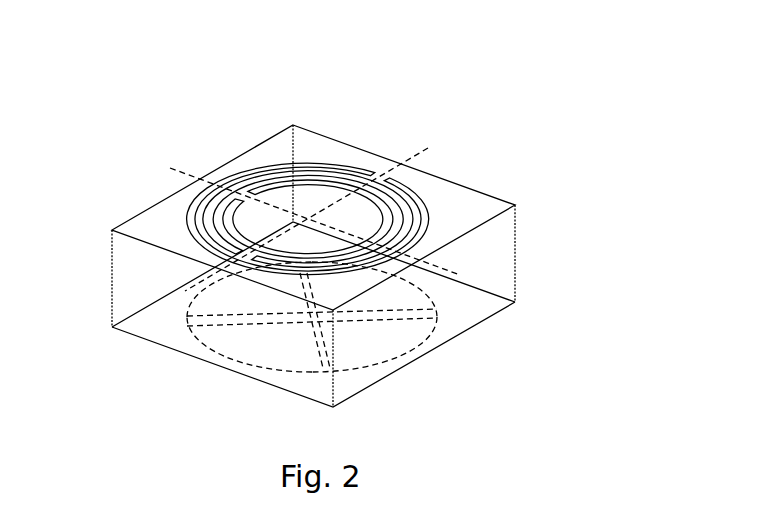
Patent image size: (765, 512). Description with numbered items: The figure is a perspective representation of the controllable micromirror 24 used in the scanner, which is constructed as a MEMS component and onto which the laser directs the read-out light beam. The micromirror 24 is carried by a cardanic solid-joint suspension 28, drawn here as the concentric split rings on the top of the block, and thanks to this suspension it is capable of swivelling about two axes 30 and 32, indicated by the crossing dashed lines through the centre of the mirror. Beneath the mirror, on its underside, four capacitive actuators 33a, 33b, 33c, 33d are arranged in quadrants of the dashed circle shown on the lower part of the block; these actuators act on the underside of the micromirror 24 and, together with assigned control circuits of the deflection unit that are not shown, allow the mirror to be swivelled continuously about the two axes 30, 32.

The micromirror 24 is at (339, 242).
The cardanic solid-joint suspension 28 is at (213, 205).
The axis 30 is at (188, 308).
The axis 32 is at (440, 265).
The capacitive actuator 33a is at (413, 298).
The capacitive actuator 33b is at (390, 344).
The capacitive actuator 33c is at (292, 348).
The capacitive actuator 33d is at (200, 280).